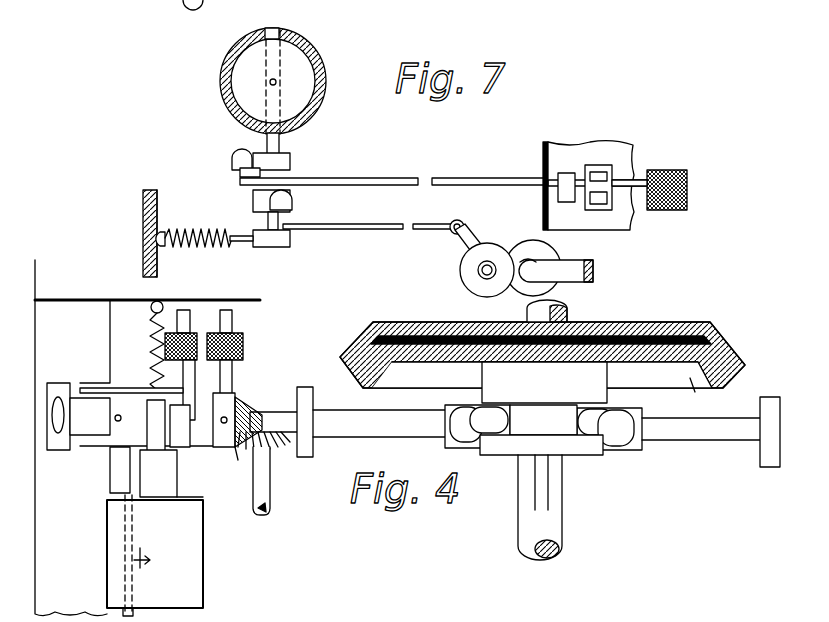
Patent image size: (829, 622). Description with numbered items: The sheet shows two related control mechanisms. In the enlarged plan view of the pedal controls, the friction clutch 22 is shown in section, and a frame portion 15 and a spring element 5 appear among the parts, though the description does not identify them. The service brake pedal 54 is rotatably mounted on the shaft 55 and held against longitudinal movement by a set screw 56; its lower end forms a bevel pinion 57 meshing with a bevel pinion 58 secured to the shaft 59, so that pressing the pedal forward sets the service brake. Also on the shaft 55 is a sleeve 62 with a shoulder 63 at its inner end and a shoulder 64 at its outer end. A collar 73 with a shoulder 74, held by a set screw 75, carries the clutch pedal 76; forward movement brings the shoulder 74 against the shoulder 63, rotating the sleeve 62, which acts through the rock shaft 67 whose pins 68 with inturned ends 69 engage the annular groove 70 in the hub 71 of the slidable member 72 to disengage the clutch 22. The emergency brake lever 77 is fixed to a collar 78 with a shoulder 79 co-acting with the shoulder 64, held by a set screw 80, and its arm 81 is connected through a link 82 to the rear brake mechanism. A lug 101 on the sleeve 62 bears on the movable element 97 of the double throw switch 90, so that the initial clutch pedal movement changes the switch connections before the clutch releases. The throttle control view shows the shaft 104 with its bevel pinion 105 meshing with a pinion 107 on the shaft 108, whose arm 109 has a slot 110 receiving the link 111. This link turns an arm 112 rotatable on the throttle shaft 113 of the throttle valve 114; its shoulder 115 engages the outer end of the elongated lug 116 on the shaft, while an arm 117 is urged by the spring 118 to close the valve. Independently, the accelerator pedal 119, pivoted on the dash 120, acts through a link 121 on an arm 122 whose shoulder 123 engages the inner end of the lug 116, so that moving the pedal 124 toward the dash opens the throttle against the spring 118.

In FIG. 4, the spring / feed direction 5 is at (150, 317).
In FIG. 4, the frame 15 is at (80, 310).
In FIG. 4, the friction clutch 22 is at (735, 335).
In FIG. 4, the service brake pedal 54 is at (243, 345).
In FIG. 4, the shaft 55 is at (262, 420).
In FIG. 4, the set screw 56 is at (241, 469).
In FIG. 4, the bevel pinion 57 is at (248, 405).
In FIG. 4, the bevel pinion 58 is at (275, 460).
In FIG. 4, the shaft 59 is at (270, 502).
In FIG. 4, the sleeve 62 is at (70, 430).
In FIG. 4, the shoulder 63 is at (180, 390).
In FIG. 4, the shoulder 64 is at (125, 388).
In FIG. 4, the rock shaft 67 is at (355, 432).
In FIG. 4, the pins 68 is at (680, 452).
In FIG. 4, the inturned ends 69 is at (612, 460).
In FIG. 4, the annular groove 70 is at (540, 400).
In FIG. 4, the hub 71 is at (600, 373).
In FIG. 4, the slidable member 72 is at (701, 393).
In FIG. 4, the collar 73 is at (224, 445).
In FIG. 4, the shoulder 74 is at (180, 447).
In FIG. 4, the set screw 75 is at (216, 390).
In FIG. 4, the clutch pedal 76 is at (190, 320).
In FIG. 4, the emergency brake lever 77 is at (60, 390).
In FIG. 4, the collar 78 is at (140, 465).
In FIG. 4, the shoulder 79 is at (120, 405).
In FIG. 4, the set screw 80 is at (100, 398).
In FIG. 4, the arm 81 is at (115, 490).
In FIG. 4, the link 82 is at (128, 500).
In FIG. 4, the double throw switch 90 is at (200, 562).
In FIG. 4, the movable element 97 is at (200, 497).
In FIG. 4, the lug 101 is at (155, 463).
In FIG. 7, the shaft 104 is at (593, 272).
In FIG. 7, the bevel pinion 105 is at (560, 258).
In FIG. 7, the pinion 107 is at (530, 245).
In FIG. 7, the shaft 108 is at (485, 272).
In FIG. 7, the arm 109 is at (478, 240).
In FIG. 7, the slot 110 is at (450, 235).
In FIG. 7, the link 111 is at (368, 222).
In FIG. 7, the arm 112 is at (292, 204).
In FIG. 7, the shaft 113 is at (268, 221).
In FIG. 7, the throttle valve 114 is at (300, 96).
In FIG. 7, the shoulder 115 is at (252, 200).
In FIG. 7, the elongated lug 116 is at (290, 160).
In FIG. 7, the arm 117 is at (245, 250).
In FIG. 7, the spring 118 is at (185, 250).
In FIG. 7, the accelerator pedal 119 is at (620, 180).
In FIG. 7, the dash 120 is at (565, 155).
In FIG. 7, the link 121 is at (450, 180).
In FIG. 7, the arm 122 is at (242, 152).
In FIG. 7, the shoulder 123 is at (242, 173).
In FIG. 7, the pedal 124 is at (655, 215).